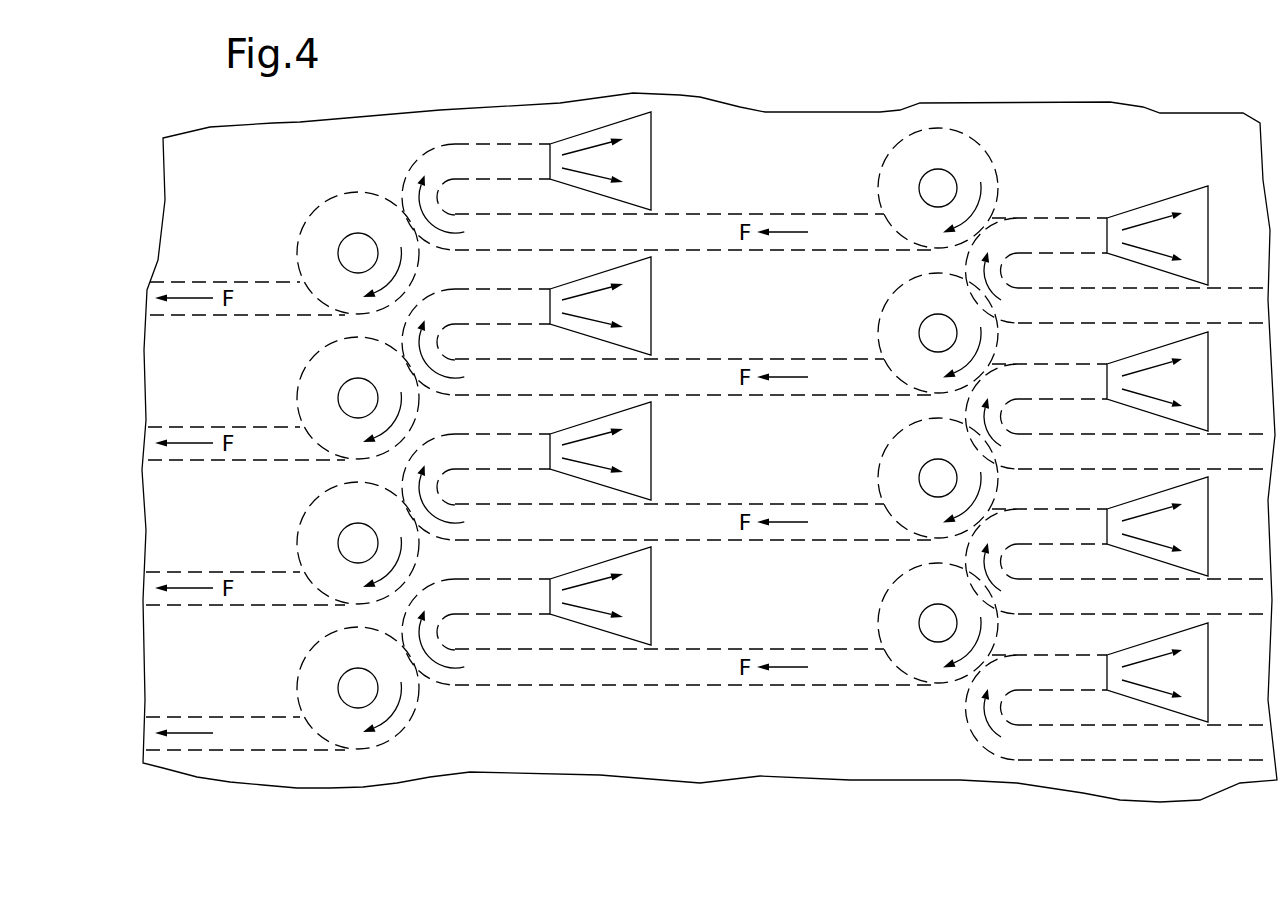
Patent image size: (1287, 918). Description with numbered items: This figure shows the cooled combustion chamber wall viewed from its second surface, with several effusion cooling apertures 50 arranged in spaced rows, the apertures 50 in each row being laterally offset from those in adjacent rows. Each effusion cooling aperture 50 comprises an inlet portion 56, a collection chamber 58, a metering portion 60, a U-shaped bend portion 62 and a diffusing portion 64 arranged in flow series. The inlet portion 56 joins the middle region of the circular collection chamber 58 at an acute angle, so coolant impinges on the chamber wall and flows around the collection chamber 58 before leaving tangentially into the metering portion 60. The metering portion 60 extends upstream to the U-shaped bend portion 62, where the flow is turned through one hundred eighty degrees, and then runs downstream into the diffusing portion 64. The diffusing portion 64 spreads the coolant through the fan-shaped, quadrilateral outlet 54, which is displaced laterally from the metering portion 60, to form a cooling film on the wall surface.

The effusion cooling aperture 50 is at (706, 460).
The outlet 54 is at (637, 162).
The inlet portion 56 is at (932, 180).
The collection chamber 58 is at (330, 243).
The metering portion 60 is at (847, 227).
The U-shaped bend portion 62 is at (417, 187).
The diffusing portion 64 is at (585, 138).